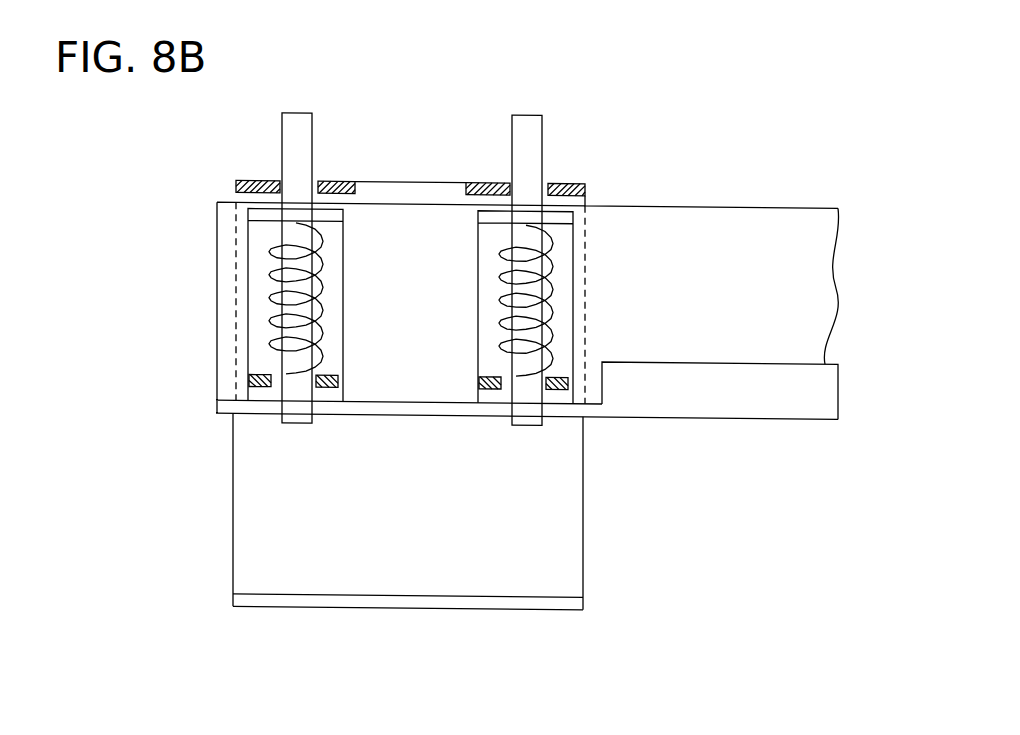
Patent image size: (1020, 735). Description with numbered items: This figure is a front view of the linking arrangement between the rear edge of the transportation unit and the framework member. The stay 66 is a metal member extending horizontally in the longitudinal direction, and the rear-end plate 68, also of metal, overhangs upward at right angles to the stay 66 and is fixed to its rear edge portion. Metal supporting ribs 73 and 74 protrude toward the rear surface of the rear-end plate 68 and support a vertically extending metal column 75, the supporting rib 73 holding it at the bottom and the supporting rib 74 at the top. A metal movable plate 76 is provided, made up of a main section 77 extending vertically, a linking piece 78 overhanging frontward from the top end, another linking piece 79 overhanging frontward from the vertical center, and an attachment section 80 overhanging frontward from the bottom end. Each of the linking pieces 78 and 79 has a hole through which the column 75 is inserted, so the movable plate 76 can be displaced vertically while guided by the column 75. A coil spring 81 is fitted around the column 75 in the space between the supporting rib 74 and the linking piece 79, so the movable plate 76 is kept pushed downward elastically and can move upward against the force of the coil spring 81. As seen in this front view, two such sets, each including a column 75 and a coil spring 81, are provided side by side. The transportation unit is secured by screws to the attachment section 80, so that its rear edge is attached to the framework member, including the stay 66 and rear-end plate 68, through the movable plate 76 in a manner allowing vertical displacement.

The stay 66 is at (749, 397).
The rear-end plate 68 is at (722, 217).
The supporting rib 73 is at (263, 402).
The supporting rib 74 is at (260, 210).
The column 75 is at (297, 115).
The movable plate 76 is at (615, 574).
The main section 77 is at (572, 487).
The linking piece 78 is at (338, 175).
The linking piece 79 is at (327, 387).
The attachment section 80 is at (392, 597).
The coil spring 81 is at (270, 269).